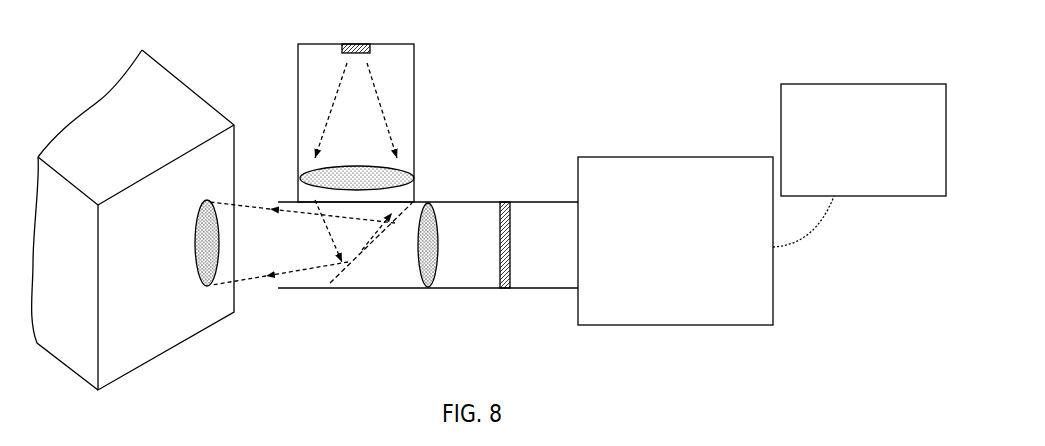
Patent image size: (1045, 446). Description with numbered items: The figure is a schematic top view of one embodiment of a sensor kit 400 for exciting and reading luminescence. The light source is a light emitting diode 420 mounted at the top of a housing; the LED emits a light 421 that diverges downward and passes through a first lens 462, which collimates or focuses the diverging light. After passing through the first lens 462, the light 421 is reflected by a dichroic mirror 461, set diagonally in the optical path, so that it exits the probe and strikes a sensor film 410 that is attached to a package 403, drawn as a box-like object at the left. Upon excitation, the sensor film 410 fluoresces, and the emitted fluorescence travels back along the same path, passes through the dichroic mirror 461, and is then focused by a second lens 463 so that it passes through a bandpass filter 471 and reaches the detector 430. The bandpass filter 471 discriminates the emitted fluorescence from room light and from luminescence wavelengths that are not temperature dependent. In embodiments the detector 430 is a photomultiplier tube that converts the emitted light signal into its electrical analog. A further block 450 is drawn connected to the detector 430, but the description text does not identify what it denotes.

The sensor kit 400 is at (860, 60).
The package 403 is at (153, 88).
The sensor film 410 is at (198, 237).
The light emitting diode (LED) 420 is at (370, 50).
The light 421 is at (382, 108).
The detector 430 is at (693, 305).
The controller 450 is at (880, 165).
The dichroic mirror 461 is at (368, 245).
The first lens 462 is at (370, 178).
The second lens 463 is at (432, 247).
The bandpass filter 471 is at (507, 218).